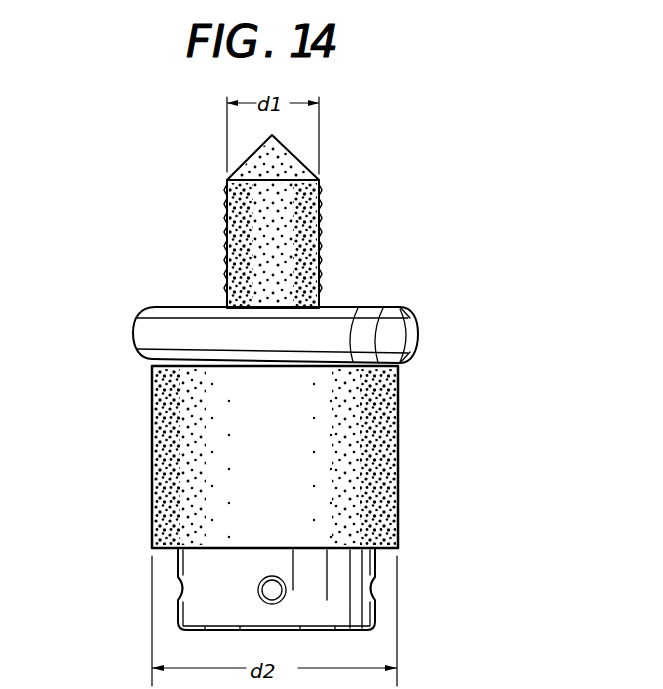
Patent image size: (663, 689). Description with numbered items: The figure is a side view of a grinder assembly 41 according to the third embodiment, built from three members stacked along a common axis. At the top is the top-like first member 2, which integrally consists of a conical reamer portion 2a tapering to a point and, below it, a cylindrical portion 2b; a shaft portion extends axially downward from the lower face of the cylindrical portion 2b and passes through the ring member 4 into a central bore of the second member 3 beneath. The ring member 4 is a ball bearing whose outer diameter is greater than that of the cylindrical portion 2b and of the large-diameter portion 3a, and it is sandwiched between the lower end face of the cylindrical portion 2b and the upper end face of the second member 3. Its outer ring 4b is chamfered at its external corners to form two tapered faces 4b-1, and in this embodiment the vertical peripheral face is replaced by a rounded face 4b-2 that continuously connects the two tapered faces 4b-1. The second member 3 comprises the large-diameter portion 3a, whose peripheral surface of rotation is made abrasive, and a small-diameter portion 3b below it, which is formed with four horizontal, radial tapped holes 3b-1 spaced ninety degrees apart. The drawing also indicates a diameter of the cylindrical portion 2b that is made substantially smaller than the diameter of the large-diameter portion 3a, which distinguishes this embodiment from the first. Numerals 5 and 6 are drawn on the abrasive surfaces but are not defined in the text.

The grinder assembly 41 is at (362, 184).
The first member 2 is at (151, 147).
The conical reamer portion 2a is at (240, 166).
The cylindrical portion 2b is at (228, 250).
The serrations on pin surface 5 is at (321, 243).
The ring member 4 is at (372, 304).
The outer ring 4b is at (135, 333).
The tapered faces 4b-1 is at (401, 311).
The rounded face 4b-2 is at (420, 334).
The roughened surface of body 6 is at (153, 409).
The second member 3 is at (60, 470).
The large-diameter portion 3a is at (152, 481).
The small-diameter portion 3b is at (168, 563).
The tapped holes 3b-1 is at (418, 596).